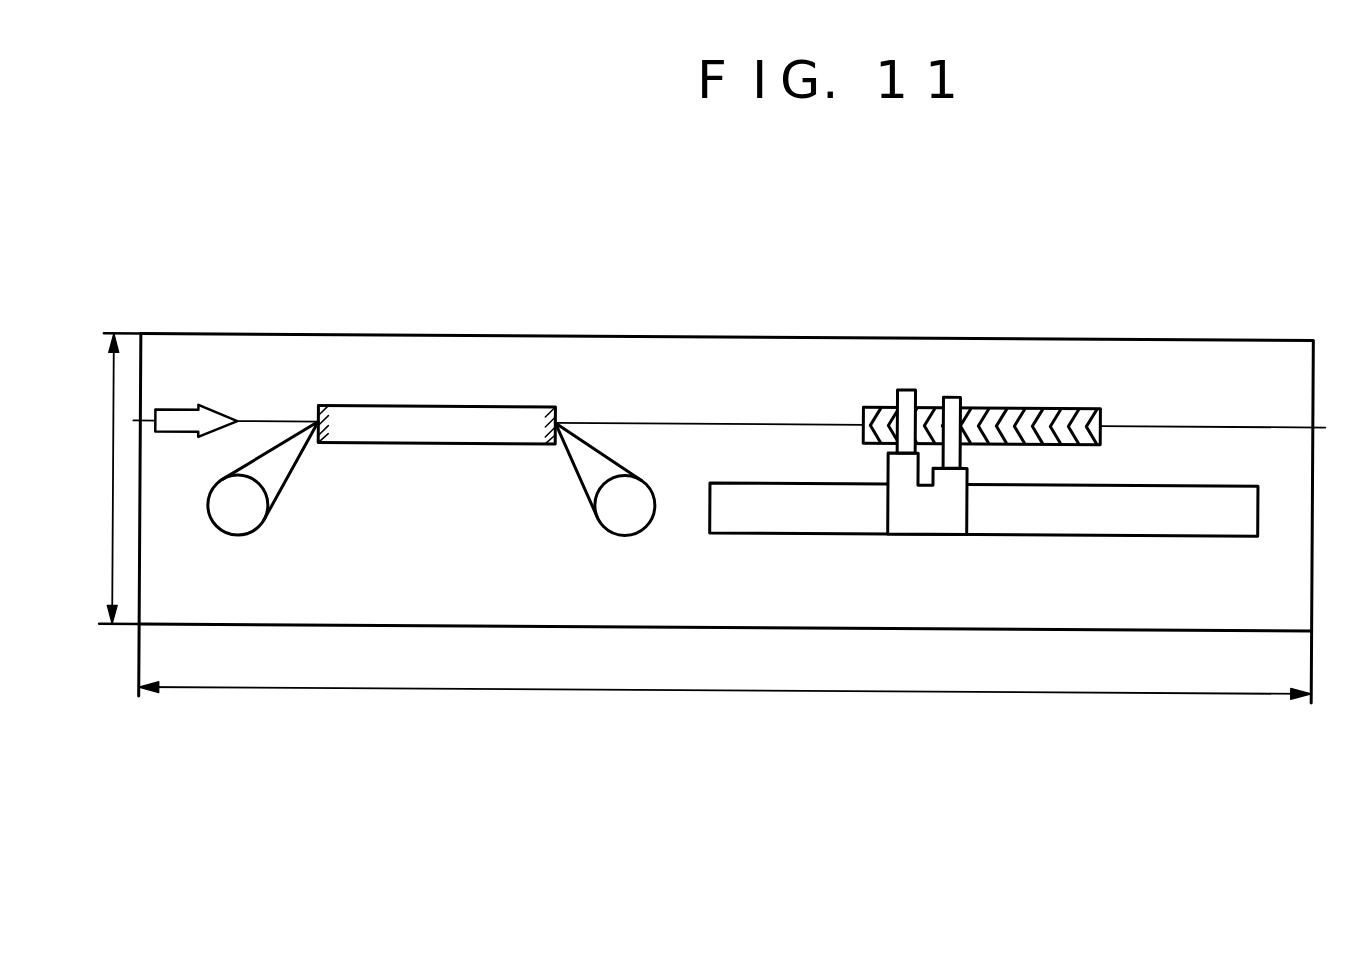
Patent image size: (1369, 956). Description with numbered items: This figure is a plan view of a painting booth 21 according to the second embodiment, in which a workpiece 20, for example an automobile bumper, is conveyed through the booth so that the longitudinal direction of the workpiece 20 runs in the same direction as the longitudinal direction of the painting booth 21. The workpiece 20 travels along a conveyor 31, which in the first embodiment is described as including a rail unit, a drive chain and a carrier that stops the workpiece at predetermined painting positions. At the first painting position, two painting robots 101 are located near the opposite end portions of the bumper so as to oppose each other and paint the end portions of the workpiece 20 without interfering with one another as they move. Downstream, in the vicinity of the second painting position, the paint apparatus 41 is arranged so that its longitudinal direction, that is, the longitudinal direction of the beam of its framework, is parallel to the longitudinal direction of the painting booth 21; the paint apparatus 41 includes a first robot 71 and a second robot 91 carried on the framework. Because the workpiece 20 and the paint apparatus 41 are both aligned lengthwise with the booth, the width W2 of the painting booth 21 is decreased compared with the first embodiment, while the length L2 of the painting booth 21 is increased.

The workpiece 20 is at (388, 408).
The painting booth 21 is at (660, 337).
The conveyor 31 is at (607, 428).
The paint apparatus 41 is at (1012, 540).
The first robot 71 is at (953, 396).
The second robot 91 is at (903, 389).
The painting robots 101 is at (262, 510).
The width of the painting booth W2 is at (113, 514).
The length of the painting booth L2 is at (725, 663).